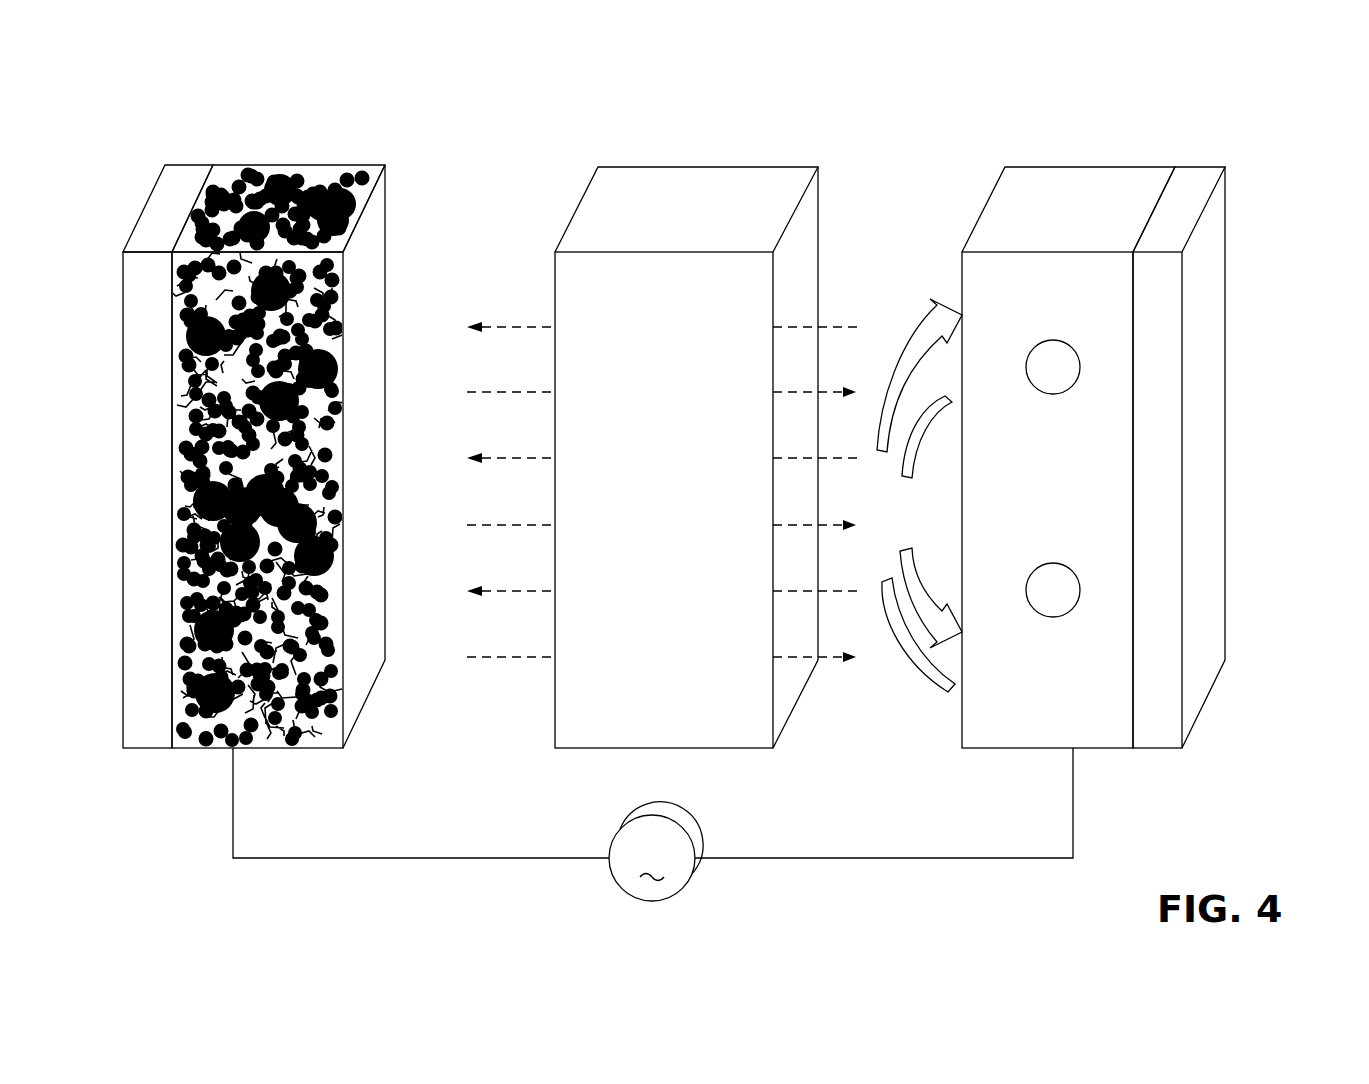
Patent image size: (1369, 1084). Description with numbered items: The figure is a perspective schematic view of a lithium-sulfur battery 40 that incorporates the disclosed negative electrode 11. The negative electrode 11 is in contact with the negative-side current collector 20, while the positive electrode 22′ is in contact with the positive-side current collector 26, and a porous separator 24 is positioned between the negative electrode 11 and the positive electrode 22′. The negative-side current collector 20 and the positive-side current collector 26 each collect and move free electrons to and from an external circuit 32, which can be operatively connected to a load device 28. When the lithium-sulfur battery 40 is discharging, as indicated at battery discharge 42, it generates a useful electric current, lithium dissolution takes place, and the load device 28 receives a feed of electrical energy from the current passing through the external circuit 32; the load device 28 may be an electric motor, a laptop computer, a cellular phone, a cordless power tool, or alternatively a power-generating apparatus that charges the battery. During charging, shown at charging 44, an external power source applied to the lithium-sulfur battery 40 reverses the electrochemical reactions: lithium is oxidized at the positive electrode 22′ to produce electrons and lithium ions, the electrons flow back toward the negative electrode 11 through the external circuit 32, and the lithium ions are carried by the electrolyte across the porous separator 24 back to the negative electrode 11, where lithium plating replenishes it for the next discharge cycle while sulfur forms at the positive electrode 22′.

The lithium-sulfur battery 40 is at (1248, 103).
The negative electrode 11 is at (292, 156).
The negative-side current collector 20 is at (150, 484).
The porous separator 24 is at (677, 156).
The positive electrode 22′ is at (1082, 156).
The positive-side current collector 26 is at (1203, 284).
The load device 28 is at (659, 851).
The external circuit 32 is at (956, 858).
The battery discharge 42 is at (827, 388).
The charging 44 is at (520, 324).